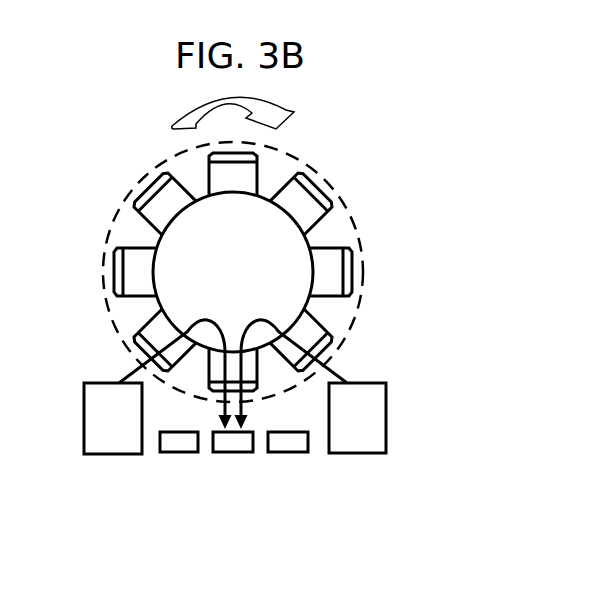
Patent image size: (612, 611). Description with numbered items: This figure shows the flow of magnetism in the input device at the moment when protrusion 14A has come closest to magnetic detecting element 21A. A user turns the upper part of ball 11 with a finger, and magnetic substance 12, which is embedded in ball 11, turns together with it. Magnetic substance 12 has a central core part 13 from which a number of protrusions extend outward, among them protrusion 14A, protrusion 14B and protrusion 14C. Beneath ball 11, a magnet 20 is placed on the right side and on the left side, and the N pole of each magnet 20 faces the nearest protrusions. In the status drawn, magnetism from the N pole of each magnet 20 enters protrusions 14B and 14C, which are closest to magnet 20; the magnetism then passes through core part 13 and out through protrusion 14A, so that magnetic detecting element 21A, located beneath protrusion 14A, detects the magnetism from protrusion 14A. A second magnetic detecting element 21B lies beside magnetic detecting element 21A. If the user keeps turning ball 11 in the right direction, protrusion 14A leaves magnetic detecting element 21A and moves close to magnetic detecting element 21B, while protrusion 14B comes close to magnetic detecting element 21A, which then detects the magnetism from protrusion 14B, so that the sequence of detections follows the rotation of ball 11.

The ball 11 is at (123, 233).
The magnetic substance 12 is at (330, 268).
The core part 13 is at (288, 257).
The protrusion 14A is at (248, 372).
The protrusion 14B is at (310, 335).
The protrusion 14C is at (155, 327).
The magnet 20 is at (93, 445).
The magnetic detecting element 21A is at (233, 445).
The magnetic detecting element 21B is at (177, 445).